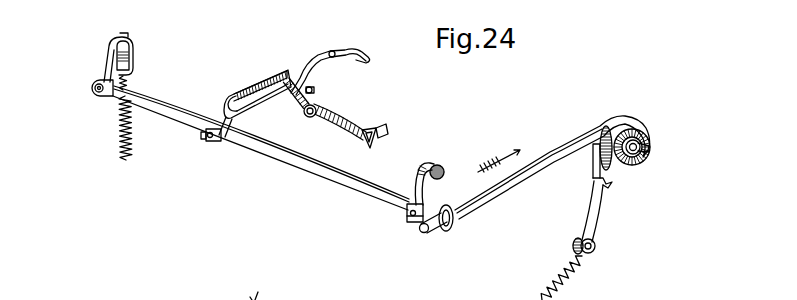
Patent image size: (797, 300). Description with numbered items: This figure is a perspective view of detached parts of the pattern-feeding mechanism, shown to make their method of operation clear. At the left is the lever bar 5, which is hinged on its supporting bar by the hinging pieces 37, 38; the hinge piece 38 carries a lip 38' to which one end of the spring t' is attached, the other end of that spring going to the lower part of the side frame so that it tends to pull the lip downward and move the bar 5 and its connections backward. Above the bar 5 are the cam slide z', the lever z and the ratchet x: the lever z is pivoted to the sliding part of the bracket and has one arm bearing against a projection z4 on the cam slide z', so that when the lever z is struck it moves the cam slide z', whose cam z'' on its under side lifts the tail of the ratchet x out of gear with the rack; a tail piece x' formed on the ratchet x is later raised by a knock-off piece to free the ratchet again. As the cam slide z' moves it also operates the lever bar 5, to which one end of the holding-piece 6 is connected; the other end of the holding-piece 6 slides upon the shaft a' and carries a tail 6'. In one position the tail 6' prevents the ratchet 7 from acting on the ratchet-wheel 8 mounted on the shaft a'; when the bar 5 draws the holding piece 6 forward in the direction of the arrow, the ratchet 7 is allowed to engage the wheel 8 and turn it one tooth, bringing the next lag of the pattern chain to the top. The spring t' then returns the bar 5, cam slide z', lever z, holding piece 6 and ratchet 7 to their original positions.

The lever bar 5 is at (362, 188).
The holding-piece 6 is at (535, 175).
The tail 6' is at (592, 152).
The ratchet 7 is at (592, 220).
The ratchet-wheel 8 is at (639, 134).
The shaft a' is at (661, 158).
The hinging piece 37 is at (429, 166).
The hinge piece 38 is at (98, 57).
The lip 38' is at (141, 65).
The spring t' is at (137, 128).
The ratchet x is at (325, 112).
The tail piece x' is at (381, 125).
The lever z is at (330, 57).
The cam slide z' is at (255, 96).
The cam z'' is at (260, 101).
The projection z4 is at (315, 88).